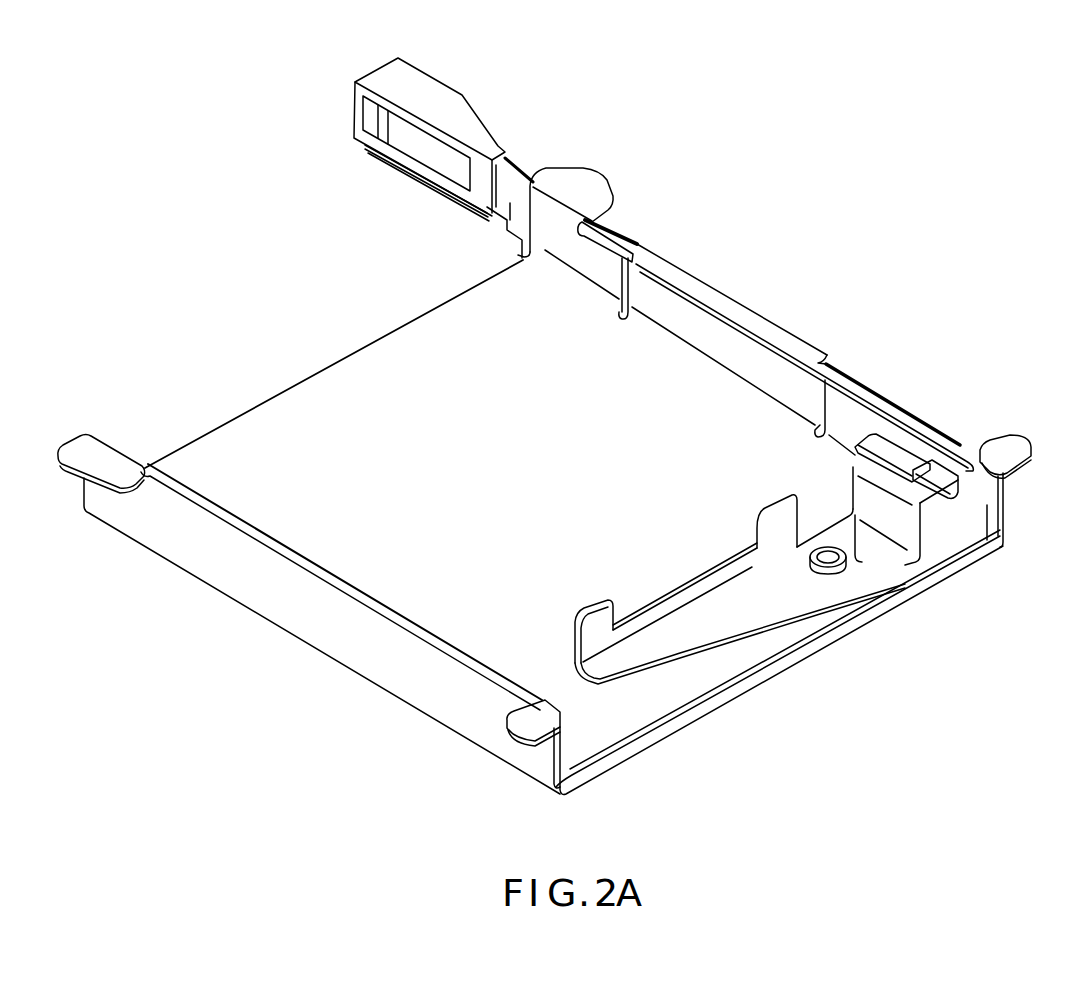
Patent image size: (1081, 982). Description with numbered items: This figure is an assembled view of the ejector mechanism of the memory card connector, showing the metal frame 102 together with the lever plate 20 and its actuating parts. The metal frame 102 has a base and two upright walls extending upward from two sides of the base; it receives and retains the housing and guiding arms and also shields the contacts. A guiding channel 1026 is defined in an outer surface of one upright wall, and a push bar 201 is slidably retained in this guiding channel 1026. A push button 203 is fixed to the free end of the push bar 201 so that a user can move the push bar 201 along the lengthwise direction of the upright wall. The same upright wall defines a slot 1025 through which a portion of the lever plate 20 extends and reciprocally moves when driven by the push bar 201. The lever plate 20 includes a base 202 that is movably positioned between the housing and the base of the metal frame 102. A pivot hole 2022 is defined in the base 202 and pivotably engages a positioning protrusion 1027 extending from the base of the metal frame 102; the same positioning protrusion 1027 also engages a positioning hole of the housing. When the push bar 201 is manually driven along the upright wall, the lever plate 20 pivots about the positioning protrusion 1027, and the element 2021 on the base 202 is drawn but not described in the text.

The metal frame 102 is at (362, 366).
The slot 1025 is at (935, 485).
The guiding channel 1026 is at (639, 251).
The positioning protrusion 1027 is at (822, 550).
The lever plate 20 is at (764, 628).
The push bar 201 is at (612, 229).
The base 202 is at (882, 562).
The tab of plate 2021 is at (890, 460).
The pivot hole 2022 is at (855, 568).
The push button 203 is at (438, 95).